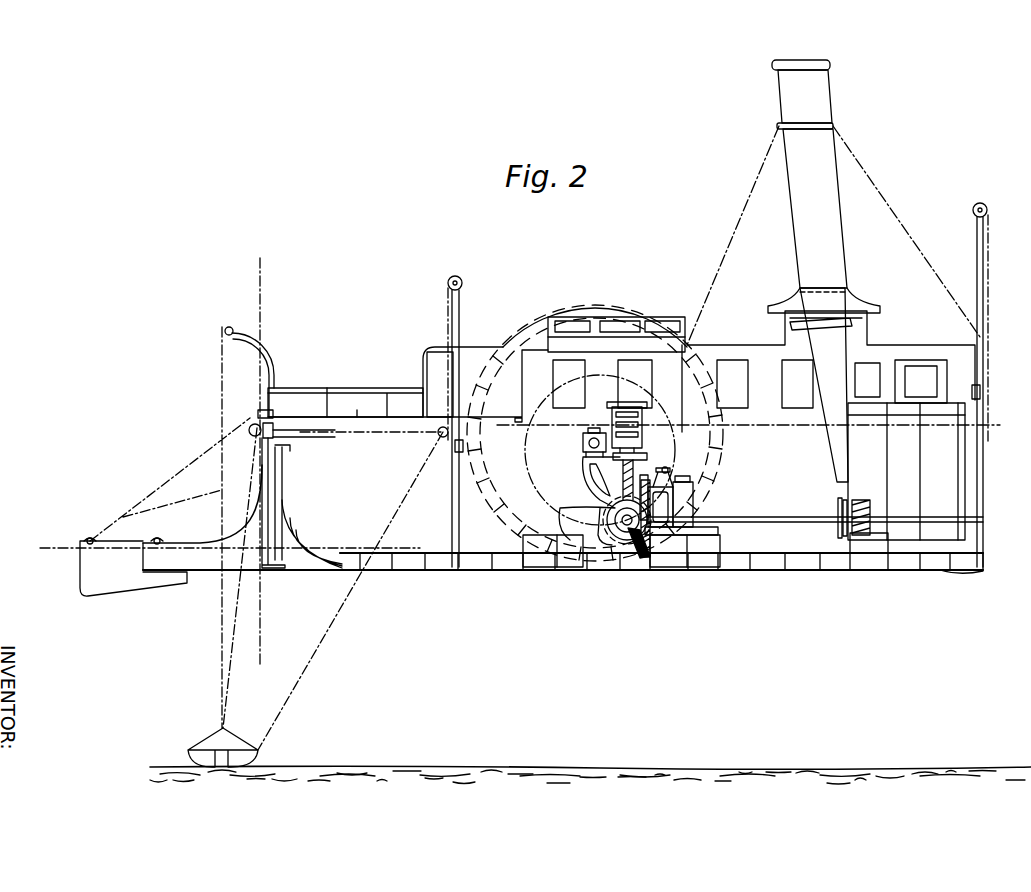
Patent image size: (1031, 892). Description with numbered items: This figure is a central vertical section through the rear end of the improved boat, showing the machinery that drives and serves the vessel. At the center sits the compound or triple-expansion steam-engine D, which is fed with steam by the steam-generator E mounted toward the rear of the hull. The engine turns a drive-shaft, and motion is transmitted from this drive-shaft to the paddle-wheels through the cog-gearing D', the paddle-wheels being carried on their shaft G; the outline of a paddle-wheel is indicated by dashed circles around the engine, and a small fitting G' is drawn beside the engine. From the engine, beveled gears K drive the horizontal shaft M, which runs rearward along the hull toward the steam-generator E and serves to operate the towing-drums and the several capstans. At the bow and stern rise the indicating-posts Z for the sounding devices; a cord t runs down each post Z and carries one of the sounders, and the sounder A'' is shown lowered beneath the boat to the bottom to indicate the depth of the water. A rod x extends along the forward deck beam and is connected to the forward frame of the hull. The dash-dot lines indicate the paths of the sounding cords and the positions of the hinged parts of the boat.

The sounder A'' is at (223, 745).
The compound or triple-expansion steam-engine D is at (633, 431).
The cog-gearing D' is at (612, 518).
The steam-generator E is at (906, 456).
The shaft of the paddle-wheels G is at (585, 442).
The crank shaft G' is at (612, 520).
The beveled gears K is at (635, 519).
The horizontal shaft M is at (815, 516).
The indicating-posts Z is at (721, 385).
The cord t is at (714, 333).
The rod x is at (348, 432).